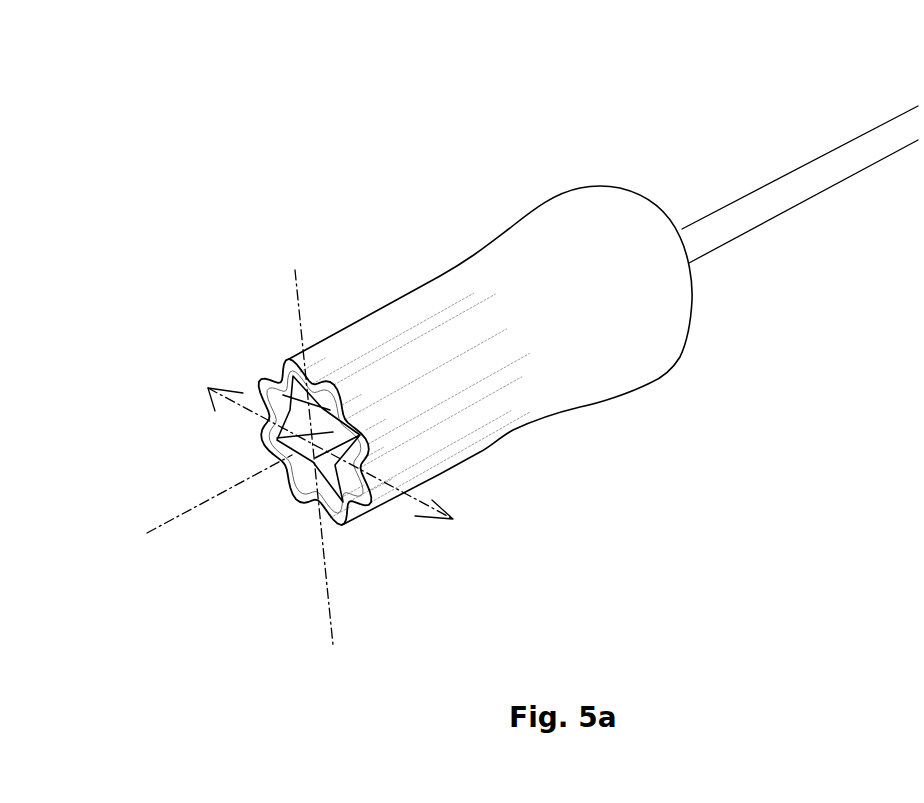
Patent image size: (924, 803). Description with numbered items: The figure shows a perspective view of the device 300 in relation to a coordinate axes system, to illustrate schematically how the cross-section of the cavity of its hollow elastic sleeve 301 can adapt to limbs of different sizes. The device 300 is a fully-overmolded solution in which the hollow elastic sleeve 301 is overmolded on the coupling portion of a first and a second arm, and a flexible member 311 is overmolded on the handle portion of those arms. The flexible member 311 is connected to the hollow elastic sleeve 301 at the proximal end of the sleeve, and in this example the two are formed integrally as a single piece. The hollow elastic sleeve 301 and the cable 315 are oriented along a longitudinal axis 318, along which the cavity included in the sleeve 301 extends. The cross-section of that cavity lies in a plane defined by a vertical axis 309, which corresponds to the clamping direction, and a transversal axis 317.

The device 300 is at (443, 229).
The hollow elastic sleeve 301 is at (315, 505).
The vertical axis 309 is at (298, 295).
The flexible member 311 is at (651, 382).
The cable 315 is at (805, 197).
The transversal axis 317 is at (420, 502).
The longitudinal axis 318 is at (172, 518).